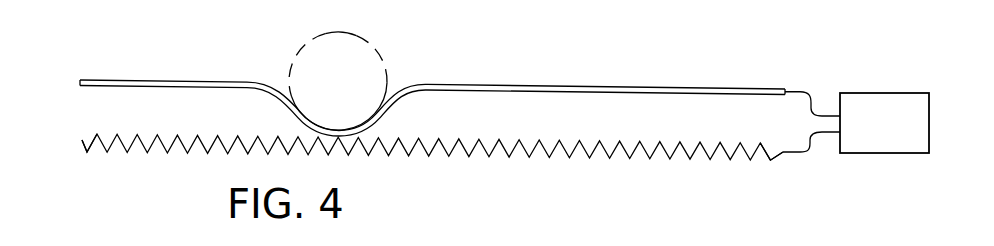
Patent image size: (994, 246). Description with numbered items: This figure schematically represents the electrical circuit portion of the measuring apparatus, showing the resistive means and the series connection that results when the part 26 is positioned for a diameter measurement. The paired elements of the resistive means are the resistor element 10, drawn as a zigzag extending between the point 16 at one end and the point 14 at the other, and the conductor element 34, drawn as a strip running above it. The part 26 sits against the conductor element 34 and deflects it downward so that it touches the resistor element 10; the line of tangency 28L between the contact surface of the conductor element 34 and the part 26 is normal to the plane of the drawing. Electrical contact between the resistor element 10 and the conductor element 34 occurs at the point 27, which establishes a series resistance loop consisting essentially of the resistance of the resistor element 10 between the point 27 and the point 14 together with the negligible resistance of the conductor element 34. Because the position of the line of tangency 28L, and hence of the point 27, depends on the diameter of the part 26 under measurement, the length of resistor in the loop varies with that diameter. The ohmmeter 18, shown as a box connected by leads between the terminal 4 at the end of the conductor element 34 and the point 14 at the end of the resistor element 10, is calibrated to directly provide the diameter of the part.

The terminal 4 is at (786, 89).
The resistor element 10 is at (628, 156).
The point 14 is at (783, 153).
The point 16 is at (82, 140).
The ohmmeter 18 is at (907, 92).
The part 26 is at (338, 32).
The point 27 is at (337, 137).
The line of tangency 28L is at (337, 130).
The conductor element 34 is at (548, 88).